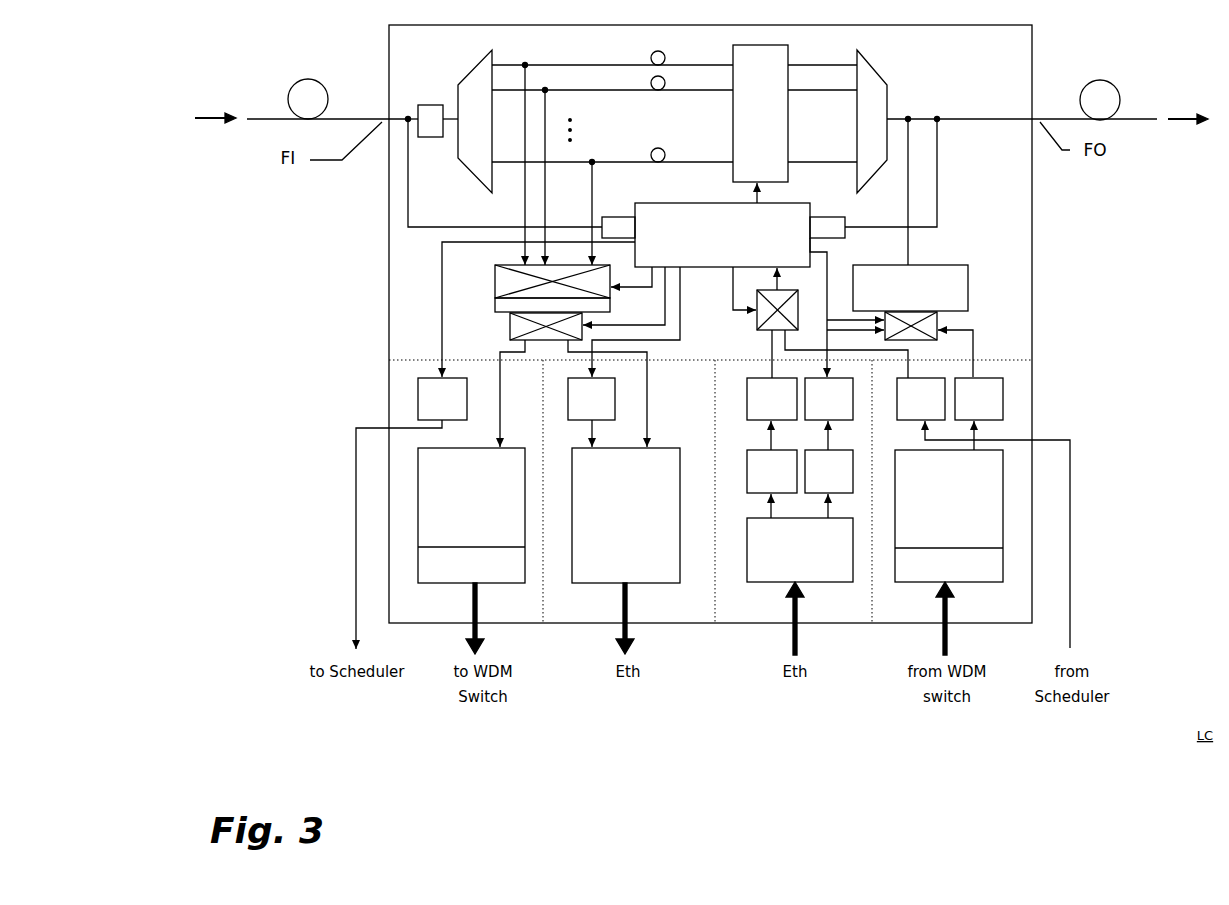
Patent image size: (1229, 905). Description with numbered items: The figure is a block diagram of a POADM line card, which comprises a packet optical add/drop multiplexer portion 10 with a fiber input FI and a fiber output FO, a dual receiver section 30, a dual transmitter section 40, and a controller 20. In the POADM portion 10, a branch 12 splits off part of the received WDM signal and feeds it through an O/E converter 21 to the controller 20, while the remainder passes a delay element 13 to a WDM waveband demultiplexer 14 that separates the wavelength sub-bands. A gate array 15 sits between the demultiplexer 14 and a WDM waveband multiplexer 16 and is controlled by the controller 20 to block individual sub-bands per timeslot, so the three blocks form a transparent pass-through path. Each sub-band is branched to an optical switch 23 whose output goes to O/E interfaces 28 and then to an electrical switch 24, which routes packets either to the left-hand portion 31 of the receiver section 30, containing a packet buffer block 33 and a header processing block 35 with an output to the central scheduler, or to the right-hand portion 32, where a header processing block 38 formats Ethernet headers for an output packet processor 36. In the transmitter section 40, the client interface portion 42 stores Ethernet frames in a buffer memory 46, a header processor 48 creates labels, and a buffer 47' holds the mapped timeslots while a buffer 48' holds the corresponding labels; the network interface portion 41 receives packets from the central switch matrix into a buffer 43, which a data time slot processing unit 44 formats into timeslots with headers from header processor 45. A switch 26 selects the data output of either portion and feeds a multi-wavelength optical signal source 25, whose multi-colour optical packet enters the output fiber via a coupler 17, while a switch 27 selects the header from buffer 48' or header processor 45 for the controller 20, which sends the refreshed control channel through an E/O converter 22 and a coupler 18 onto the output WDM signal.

The POADM portion 10 is at (643, 56).
The branch 12 is at (403, 130).
The delay element 13 is at (428, 103).
The WDM waveband demultiplexer 14 is at (472, 82).
The gate array 15 is at (790, 56).
The WDM waveband multiplexer 16 is at (868, 64).
The coupler 17 is at (911, 117).
The coupler 18 is at (940, 128).
The controller 20 is at (713, 203).
The O/E converter 21 is at (608, 215).
The E/O converter 22 is at (837, 217).
The optical switch 23 is at (495, 280).
The electrical switch 24 is at (508, 328).
The multi-wavelength optical signal source 25 is at (973, 287).
The switch 26 is at (940, 318).
The switch 27 is at (758, 333).
The O/E interfaces 28 is at (495, 305).
The dual receiver section 30 is at (553, 648).
The left-hand portion 31 is at (493, 627).
The right-hand portion 32 is at (563, 625).
The packet buffer block 33 is at (418, 478).
The header processing block 35 is at (417, 403).
The output packet processor 36 is at (637, 587).
The header processing block 38 is at (593, 422).
The dual transmitter section 40 is at (882, 667).
The network interface portion 41 is at (890, 627).
The client interface portion 42 is at (828, 627).
The buffer 43 is at (1003, 492).
The data time slot processing unit 44 is at (1003, 403).
The header processor 45 is at (918, 377).
The buffer memory 46 is at (812, 585).
The buffer 47' is at (849, 455).
The header processor 48 is at (757, 414).
The buffer 48' is at (823, 410).